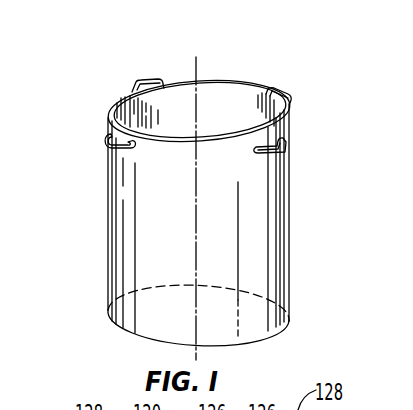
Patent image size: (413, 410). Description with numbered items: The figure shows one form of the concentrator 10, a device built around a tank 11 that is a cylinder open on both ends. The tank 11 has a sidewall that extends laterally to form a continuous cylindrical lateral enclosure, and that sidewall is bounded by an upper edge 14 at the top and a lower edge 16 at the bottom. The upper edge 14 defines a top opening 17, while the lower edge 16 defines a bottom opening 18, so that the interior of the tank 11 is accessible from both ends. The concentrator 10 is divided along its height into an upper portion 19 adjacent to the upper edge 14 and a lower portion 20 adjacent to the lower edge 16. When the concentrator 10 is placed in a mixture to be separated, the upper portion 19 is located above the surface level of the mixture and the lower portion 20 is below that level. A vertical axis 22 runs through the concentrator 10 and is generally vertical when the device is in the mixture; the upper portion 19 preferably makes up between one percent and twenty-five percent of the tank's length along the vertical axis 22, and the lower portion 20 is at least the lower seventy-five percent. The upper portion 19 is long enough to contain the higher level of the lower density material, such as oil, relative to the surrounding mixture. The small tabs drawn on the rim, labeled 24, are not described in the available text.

The concentrator 10 is at (206, 207).
The tank 11 is at (289, 250).
The upper edge 14 is at (248, 88).
The lower edge 16 is at (268, 336).
The top opening 17 is at (179, 101).
The bottom opening 18 is at (168, 322).
The upper portion 19 is at (107, 150).
The lower portion 20 is at (107, 302).
The vertical axis 22 is at (200, 64).
The tab 24 is at (291, 101).